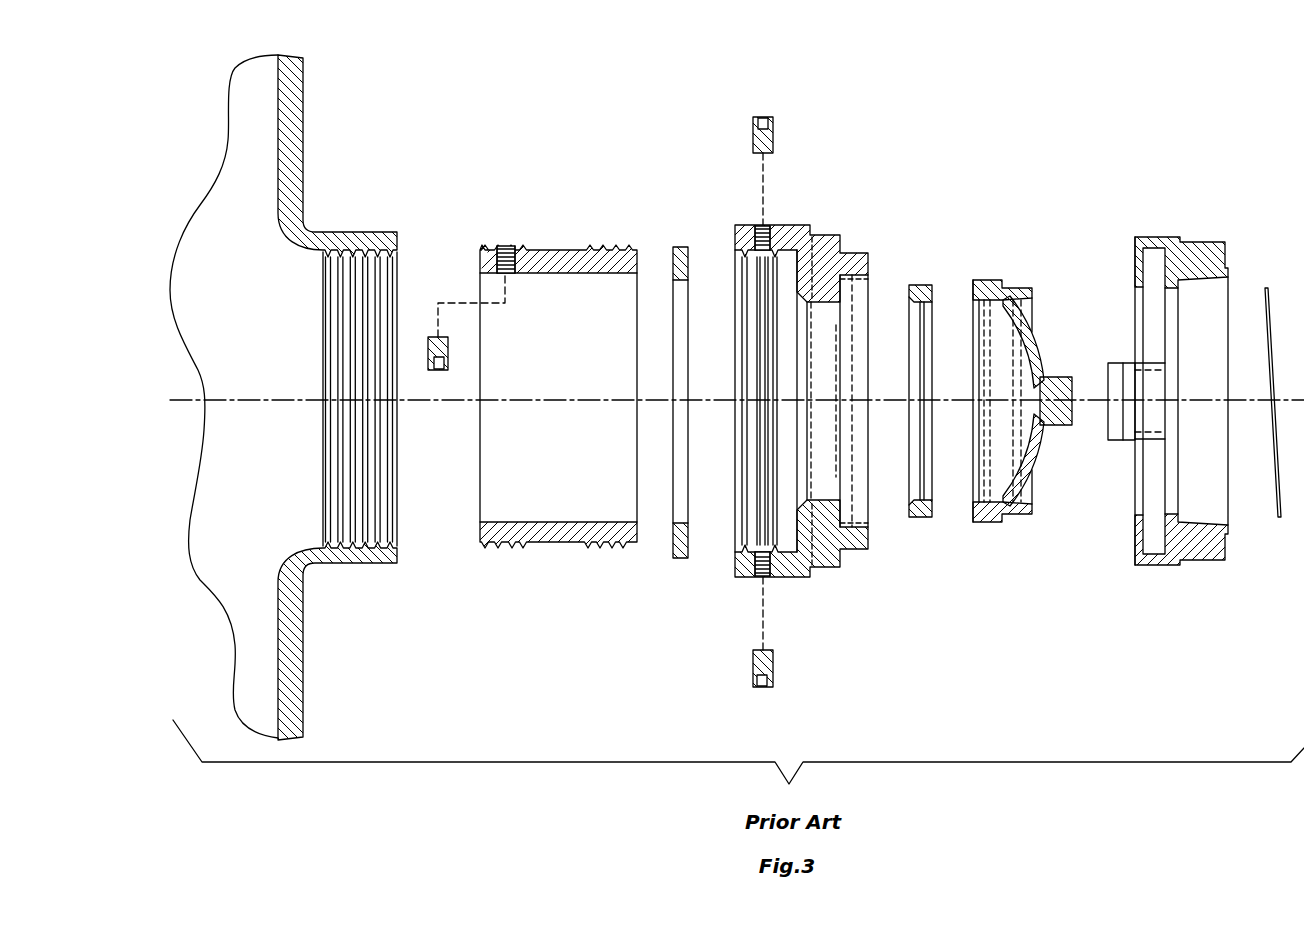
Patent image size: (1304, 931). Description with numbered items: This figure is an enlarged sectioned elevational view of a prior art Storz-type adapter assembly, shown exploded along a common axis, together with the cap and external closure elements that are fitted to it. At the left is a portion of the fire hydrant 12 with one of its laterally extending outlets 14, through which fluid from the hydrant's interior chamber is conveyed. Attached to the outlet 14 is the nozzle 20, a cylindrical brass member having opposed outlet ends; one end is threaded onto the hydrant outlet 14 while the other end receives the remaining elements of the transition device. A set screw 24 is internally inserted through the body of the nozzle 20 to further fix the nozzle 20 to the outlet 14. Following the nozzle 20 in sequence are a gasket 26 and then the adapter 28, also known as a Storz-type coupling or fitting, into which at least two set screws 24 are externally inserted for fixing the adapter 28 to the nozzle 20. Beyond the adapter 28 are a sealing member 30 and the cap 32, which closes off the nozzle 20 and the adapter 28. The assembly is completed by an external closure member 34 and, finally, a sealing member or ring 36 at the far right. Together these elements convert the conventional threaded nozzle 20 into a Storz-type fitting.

The fire hydrant 12 is at (305, 100).
The outlet 14 is at (360, 565).
The nozzle 20 is at (555, 547).
The set screw 24 is at (428, 343).
The gasket 26 is at (678, 559).
The adapter 28 is at (788, 579).
The sealing member 30 is at (923, 284).
The cap 32 is at (986, 505).
The external closure member 34 is at (1158, 236).
The sealing member or ring 36 is at (1276, 510).